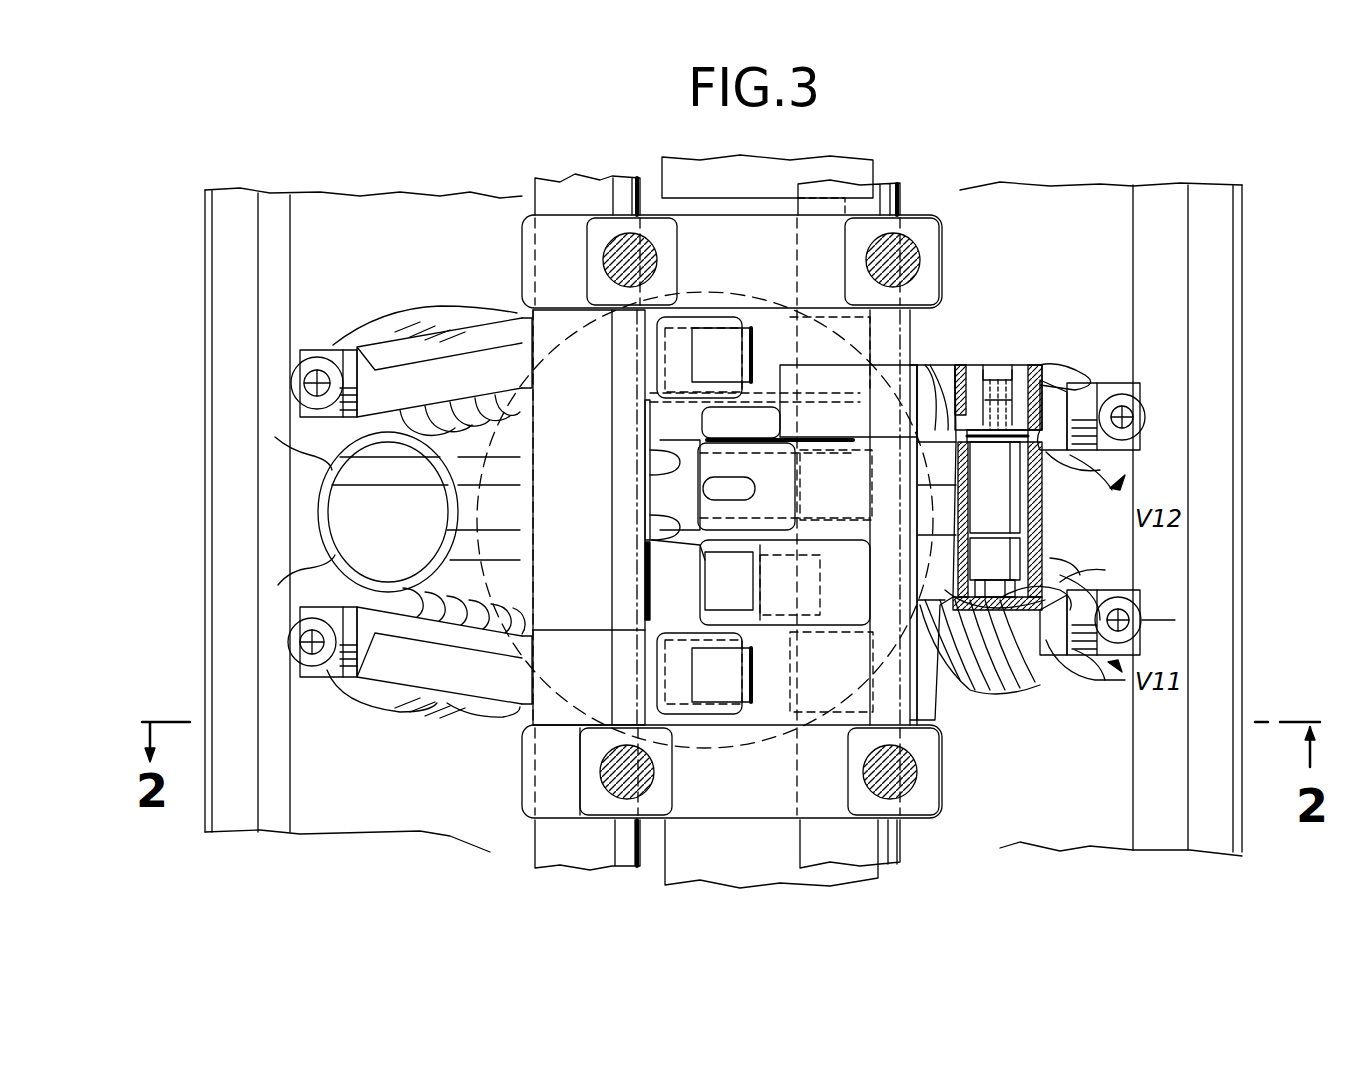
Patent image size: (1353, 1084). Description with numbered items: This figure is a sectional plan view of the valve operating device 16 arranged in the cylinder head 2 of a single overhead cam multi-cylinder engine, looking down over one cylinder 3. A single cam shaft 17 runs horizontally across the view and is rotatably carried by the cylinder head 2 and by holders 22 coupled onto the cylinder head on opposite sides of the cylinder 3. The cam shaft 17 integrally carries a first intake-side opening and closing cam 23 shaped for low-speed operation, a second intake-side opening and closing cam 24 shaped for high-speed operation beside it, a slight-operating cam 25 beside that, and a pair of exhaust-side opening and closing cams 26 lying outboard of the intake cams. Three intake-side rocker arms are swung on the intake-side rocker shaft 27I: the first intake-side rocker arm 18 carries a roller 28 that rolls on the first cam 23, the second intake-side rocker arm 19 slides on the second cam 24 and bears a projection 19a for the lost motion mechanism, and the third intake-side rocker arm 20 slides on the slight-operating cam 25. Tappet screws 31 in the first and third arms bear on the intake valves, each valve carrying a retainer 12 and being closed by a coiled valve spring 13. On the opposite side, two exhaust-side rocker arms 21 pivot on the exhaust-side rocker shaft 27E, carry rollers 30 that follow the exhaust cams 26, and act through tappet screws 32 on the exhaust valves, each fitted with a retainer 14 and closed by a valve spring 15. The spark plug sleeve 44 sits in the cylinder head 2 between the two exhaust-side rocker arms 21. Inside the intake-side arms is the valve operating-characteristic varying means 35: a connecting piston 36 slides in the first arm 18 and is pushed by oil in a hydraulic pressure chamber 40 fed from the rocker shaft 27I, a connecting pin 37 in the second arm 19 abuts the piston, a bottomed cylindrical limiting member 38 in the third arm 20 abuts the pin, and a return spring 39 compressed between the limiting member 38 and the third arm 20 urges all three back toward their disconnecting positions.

The cylinder head 2 is at (215, 805).
The cylinder 3 is at (562, 771).
The retainer 12 is at (1065, 375).
The valve spring 13 is at (985, 365).
The retainer 14 is at (352, 358).
The valve spring 15 is at (407, 326).
The valve operating device 16 is at (976, 742).
The cam shaft 17 is at (752, 873).
The first intake-side rocker arm 18 is at (868, 640).
The second intake-side rocker arm 19 is at (632, 453).
The projection 19a is at (735, 483).
The third intake-side rocker arm 20 is at (942, 370).
The exhaust-side rocker arm 21 is at (438, 352).
The holder 22 is at (520, 240).
The first intake-side opening and closing cam 23 is at (655, 573).
The second intake-side opening and closing cam 24 is at (630, 484).
The slight-operating cam 25 is at (589, 517).
The exhaust-side opening and closing cam 26 is at (767, 330).
The exhaust-side rocker shaft 27E is at (548, 848).
The intake-side rocker shaft 27I is at (895, 842).
The roller 28 is at (660, 542).
The roller 30 is at (717, 338).
The tappet screw 31 is at (1145, 410).
The tappet screw 32 is at (300, 383).
The valve operating-characteristic varying means 35 is at (945, 492).
The connecting piston 36 is at (1038, 552).
The connecting pin 37 is at (970, 568).
The limiting member 38 is at (905, 415).
The return spring 39 is at (1022, 368).
The hydraulic pressure chamber 40 is at (1058, 575).
The spark plug sleeve 44 is at (330, 528).